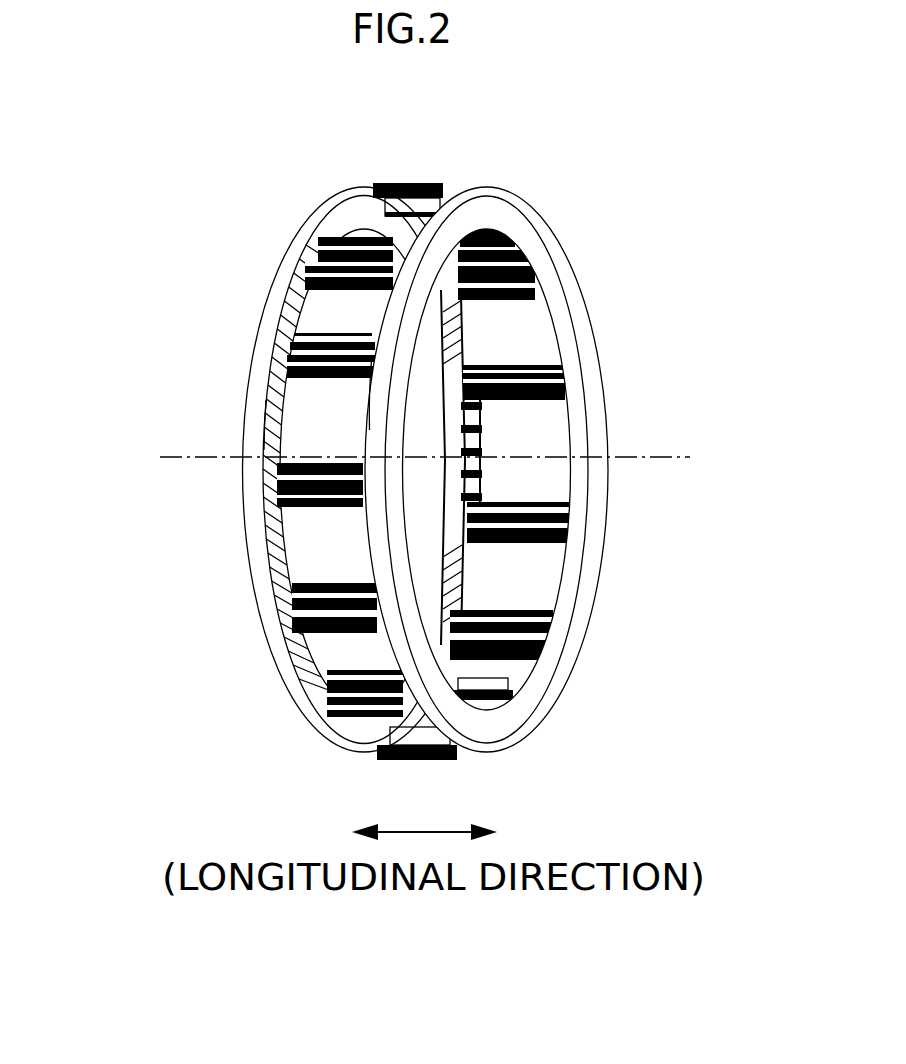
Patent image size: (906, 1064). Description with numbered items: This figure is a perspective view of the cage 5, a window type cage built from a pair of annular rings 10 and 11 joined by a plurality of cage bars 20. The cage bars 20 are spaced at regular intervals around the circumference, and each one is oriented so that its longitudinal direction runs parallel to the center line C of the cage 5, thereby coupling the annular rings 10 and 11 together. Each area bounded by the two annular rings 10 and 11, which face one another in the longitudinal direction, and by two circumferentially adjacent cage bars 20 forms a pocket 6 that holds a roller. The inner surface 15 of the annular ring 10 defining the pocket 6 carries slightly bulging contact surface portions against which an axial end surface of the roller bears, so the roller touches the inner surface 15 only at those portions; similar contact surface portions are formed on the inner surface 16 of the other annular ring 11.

The cage 5 is at (406, 427).
The annular ring 10 is at (280, 283).
The annular ring 11 is at (557, 280).
The inner surface 15 is at (273, 420).
The inner surface 16 is at (368, 395).
The cage bar 20 is at (298, 484).
The pocket 6 is at (315, 555).
The center line C is at (650, 455).